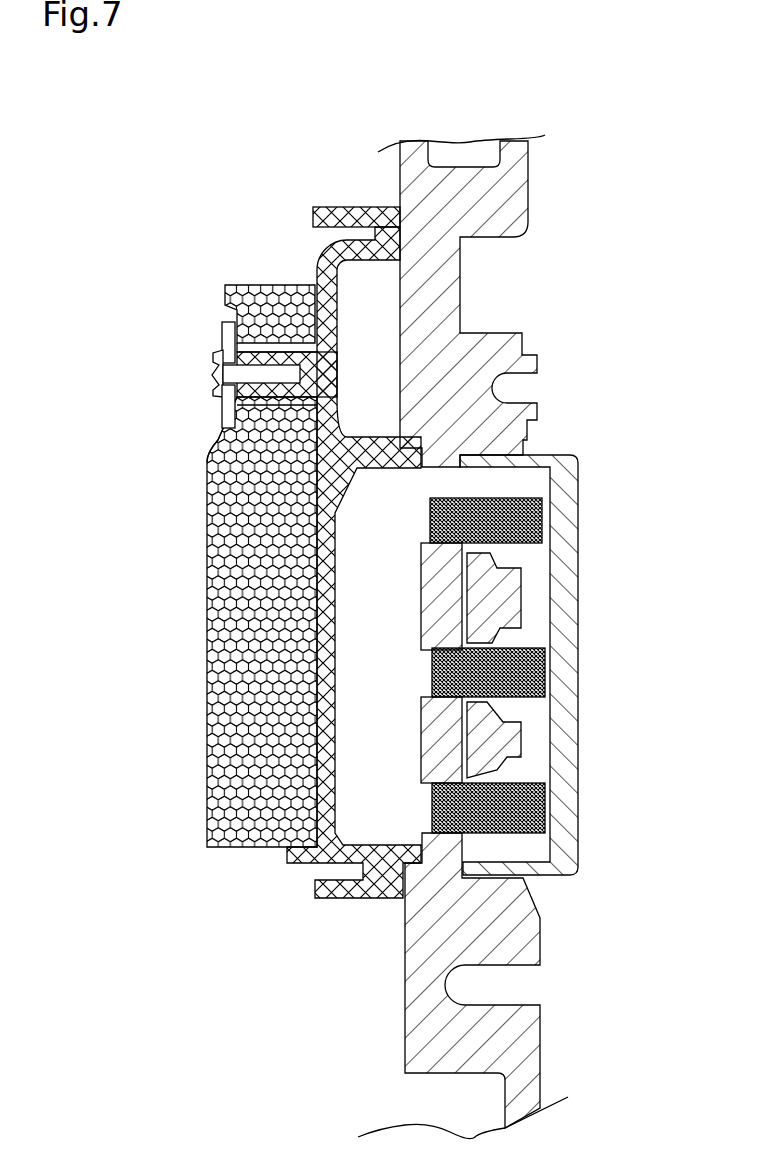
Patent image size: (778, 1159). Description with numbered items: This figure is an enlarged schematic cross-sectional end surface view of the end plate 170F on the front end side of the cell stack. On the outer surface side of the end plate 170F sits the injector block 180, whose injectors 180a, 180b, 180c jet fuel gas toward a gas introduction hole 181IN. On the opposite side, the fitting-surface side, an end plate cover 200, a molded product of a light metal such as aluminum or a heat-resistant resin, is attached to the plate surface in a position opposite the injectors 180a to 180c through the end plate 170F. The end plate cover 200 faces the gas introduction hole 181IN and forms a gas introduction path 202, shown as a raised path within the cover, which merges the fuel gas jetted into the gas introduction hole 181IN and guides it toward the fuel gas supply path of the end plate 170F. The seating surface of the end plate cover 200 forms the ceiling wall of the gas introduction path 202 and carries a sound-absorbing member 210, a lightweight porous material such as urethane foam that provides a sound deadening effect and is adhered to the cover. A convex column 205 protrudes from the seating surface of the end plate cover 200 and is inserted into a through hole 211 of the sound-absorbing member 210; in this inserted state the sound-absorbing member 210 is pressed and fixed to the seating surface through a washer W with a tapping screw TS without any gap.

The end plate 170F is at (530, 182).
The injector block 180 is at (567, 577).
The injector 180a is at (548, 513).
The injector 180b is at (548, 680).
The injector 180c is at (548, 815).
The gas introduction hole 181IN is at (428, 498).
The gas introduction path 202 is at (403, 648).
The end plate cover 200 is at (318, 268).
The sound-absorbing member 210 is at (207, 730).
The through hole 211 is at (208, 487).
The washer W is at (225, 325).
The tapping screw TS is at (220, 355).
The convex column 205 is at (222, 418).